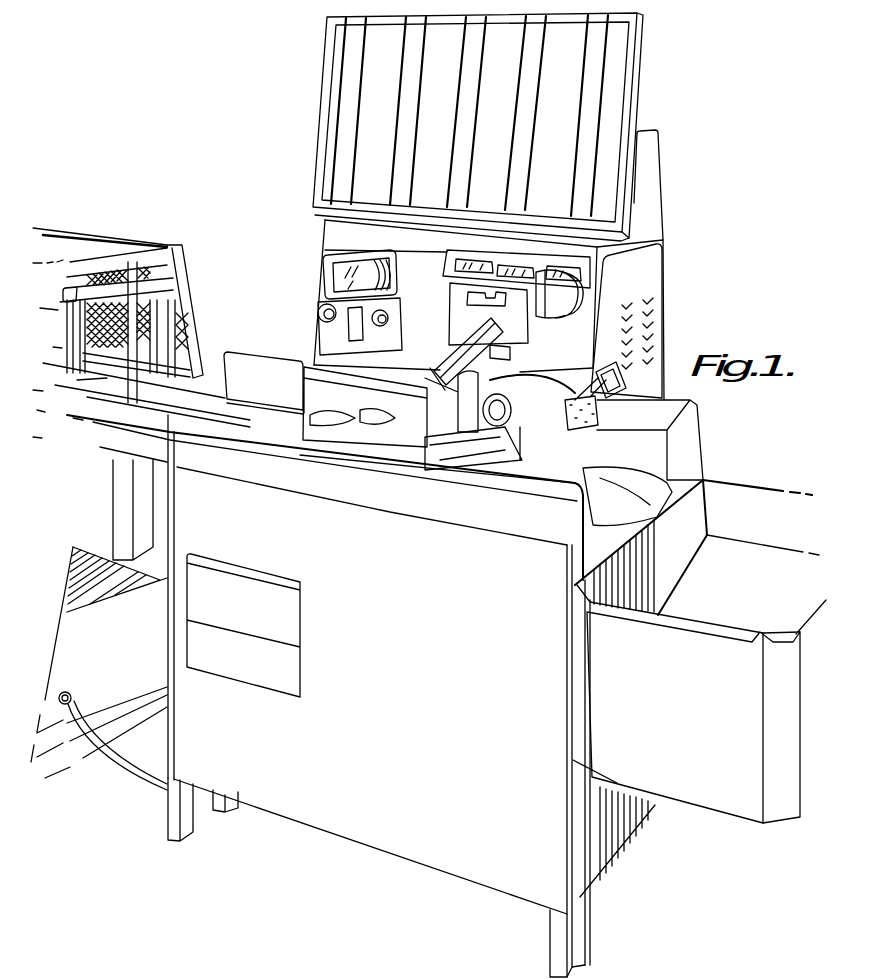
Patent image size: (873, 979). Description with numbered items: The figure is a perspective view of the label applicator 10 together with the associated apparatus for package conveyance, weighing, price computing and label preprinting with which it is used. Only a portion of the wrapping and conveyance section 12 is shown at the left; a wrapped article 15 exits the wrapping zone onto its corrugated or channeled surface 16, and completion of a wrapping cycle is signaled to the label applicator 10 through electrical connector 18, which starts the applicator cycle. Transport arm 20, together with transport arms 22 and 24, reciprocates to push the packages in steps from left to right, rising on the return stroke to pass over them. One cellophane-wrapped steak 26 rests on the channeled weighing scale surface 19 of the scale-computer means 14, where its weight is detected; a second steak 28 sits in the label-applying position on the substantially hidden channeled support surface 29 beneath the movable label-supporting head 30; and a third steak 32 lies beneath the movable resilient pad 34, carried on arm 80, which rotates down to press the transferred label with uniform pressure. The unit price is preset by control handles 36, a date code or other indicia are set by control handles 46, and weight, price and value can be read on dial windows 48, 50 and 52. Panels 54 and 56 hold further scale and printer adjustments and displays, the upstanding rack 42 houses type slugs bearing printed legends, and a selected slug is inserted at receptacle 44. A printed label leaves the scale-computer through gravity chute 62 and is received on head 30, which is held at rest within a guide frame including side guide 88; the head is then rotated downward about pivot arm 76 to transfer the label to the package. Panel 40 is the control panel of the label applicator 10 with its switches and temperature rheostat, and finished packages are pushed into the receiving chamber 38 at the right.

The label applicator 10 is at (438, 698).
The conveyance section 12 is at (78, 523).
The scale-computer means 14 is at (436, 295).
The wrapped article 15 is at (103, 376).
The corrugated or channeled surface 16 is at (163, 400).
The electrical connector 18 is at (103, 790).
The channeled weighing scale surface 19 is at (387, 440).
The transport arm 20 is at (277, 413).
The transport arm 22 is at (410, 430).
The transport arm 24 is at (522, 458).
The cellophane-wrapped steak 26 is at (320, 427).
The cellophane-wrapped steak 28 is at (495, 426).
The channeled support surface 29 is at (500, 470).
The movable label-supporting head 30 is at (448, 372).
The cellophane-wrapped steak 32 is at (640, 478).
The movable resilient patter or pad 34 is at (630, 407).
The control handles 36 is at (563, 287).
The receiving chamber 38 is at (680, 711).
The control panel 40 is at (300, 627).
The upstanding rack 42 is at (649, 109).
The receptacle 44 is at (510, 304).
The control handles 46 is at (550, 258).
The dial window 48 is at (465, 262).
The dial window 50 is at (500, 266).
The dial window 52 is at (557, 266).
The panel 54 is at (338, 267).
The panel 56 is at (318, 315).
The gravity chute 62 is at (480, 300).
The pivot arm 76 is at (482, 384).
The arm 80 is at (617, 381).
The side guide 88 is at (510, 353).